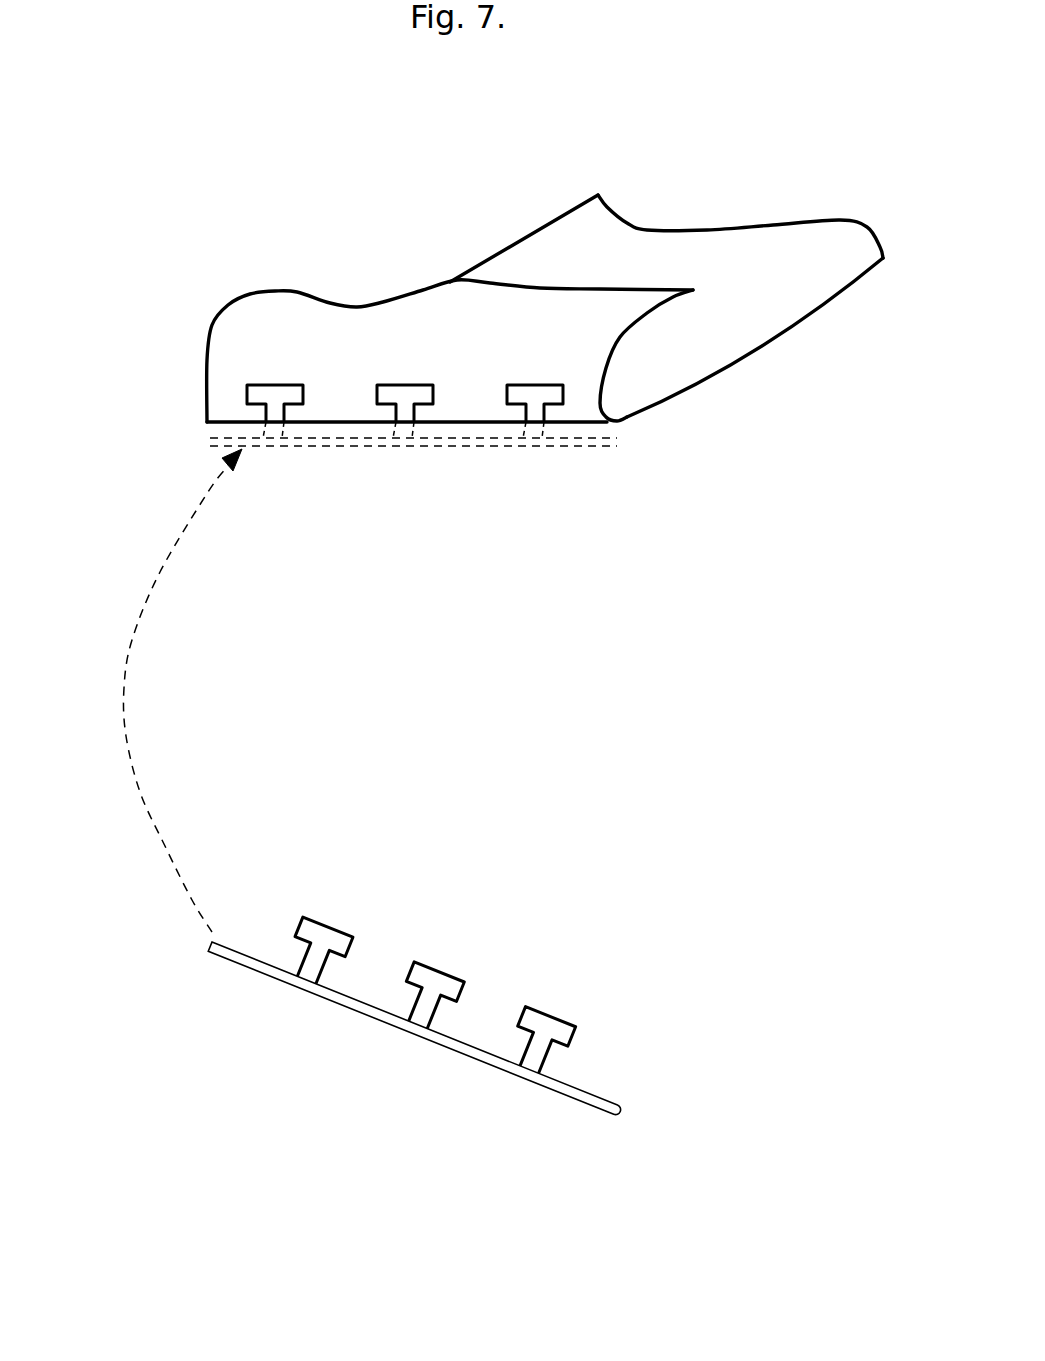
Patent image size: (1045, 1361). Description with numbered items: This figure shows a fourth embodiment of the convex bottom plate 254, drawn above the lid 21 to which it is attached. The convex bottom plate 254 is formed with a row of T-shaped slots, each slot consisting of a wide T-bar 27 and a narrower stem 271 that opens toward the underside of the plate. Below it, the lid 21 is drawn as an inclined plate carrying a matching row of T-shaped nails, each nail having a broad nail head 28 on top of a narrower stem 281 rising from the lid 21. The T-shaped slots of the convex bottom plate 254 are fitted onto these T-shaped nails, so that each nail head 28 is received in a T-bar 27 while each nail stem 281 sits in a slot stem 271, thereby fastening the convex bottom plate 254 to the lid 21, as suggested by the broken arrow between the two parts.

The T-bar 27 is at (268, 393).
The stem 271 is at (287, 422).
The convex bottom plate 254 is at (638, 397).
The nail head 28 is at (328, 928).
The stem 281 is at (318, 957).
The lid 21 is at (572, 1100).